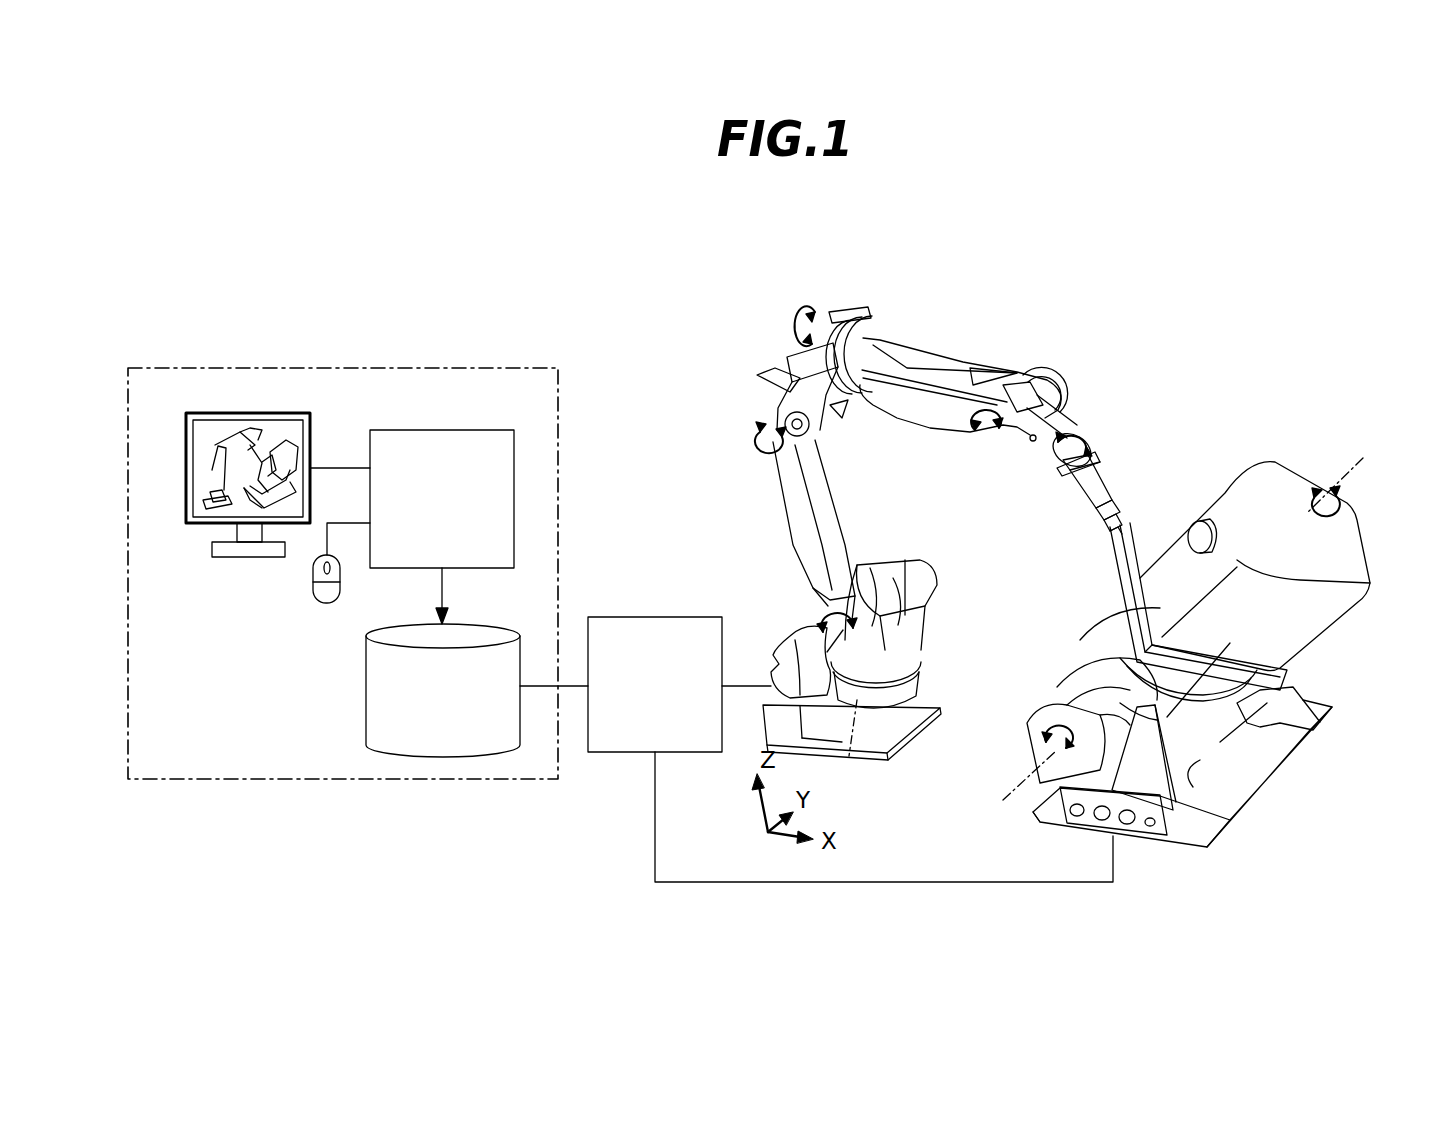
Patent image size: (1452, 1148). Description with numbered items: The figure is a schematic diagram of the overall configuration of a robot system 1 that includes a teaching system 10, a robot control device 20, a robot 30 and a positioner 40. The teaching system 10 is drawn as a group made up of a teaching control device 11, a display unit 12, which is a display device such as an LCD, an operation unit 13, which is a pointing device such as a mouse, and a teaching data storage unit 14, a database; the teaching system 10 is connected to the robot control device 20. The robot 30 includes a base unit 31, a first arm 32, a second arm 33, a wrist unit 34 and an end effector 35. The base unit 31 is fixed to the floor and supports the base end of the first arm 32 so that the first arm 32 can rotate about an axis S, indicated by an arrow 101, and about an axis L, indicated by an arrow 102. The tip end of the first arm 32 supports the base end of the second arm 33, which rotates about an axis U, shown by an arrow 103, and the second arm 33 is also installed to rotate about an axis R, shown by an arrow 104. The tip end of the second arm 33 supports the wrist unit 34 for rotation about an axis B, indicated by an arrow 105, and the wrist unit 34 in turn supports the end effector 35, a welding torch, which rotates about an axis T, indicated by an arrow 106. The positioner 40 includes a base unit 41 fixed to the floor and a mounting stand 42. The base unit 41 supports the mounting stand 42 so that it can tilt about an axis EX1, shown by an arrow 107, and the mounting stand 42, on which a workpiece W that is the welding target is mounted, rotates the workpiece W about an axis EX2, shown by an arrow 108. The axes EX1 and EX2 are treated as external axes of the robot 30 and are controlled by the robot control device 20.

The robot system 1 is at (1160, 230).
The teaching system 10 is at (506, 366).
The teaching control device 11 is at (488, 430).
The display unit 12 is at (187, 435).
The operation unit 13 is at (328, 604).
The teaching data storage unit 14 is at (516, 630).
The robot control device 20 is at (693, 617).
The robot 30 is at (843, 285).
The base unit 31 is at (918, 691).
The first arm 32 is at (843, 510).
The second arm 33 is at (906, 424).
The wrist unit 34 is at (1033, 443).
The end effector 35 is at (1098, 512).
The positioner 40 is at (1295, 443).
The base unit 41 is at (1193, 760).
The mounting stand 42 is at (1245, 718).
The arrow 101 is at (898, 712).
The arrow 102 is at (818, 622).
The arrow 103 is at (752, 428).
The arrow 104 is at (796, 302).
The arrow 105 is at (994, 446).
The arrow 106 is at (1082, 440).
The arrow 107 is at (1032, 720).
The arrow 108 is at (1350, 508).
The axis S is at (846, 752).
The axis L is at (810, 640).
The axis U is at (770, 433).
The axis R is at (800, 328).
The axis B is at (1054, 383).
The axis T is at (1094, 473).
The workpiece W is at (1343, 548).
The axis EX1 is at (1013, 790).
The axis EX2 is at (1346, 471).